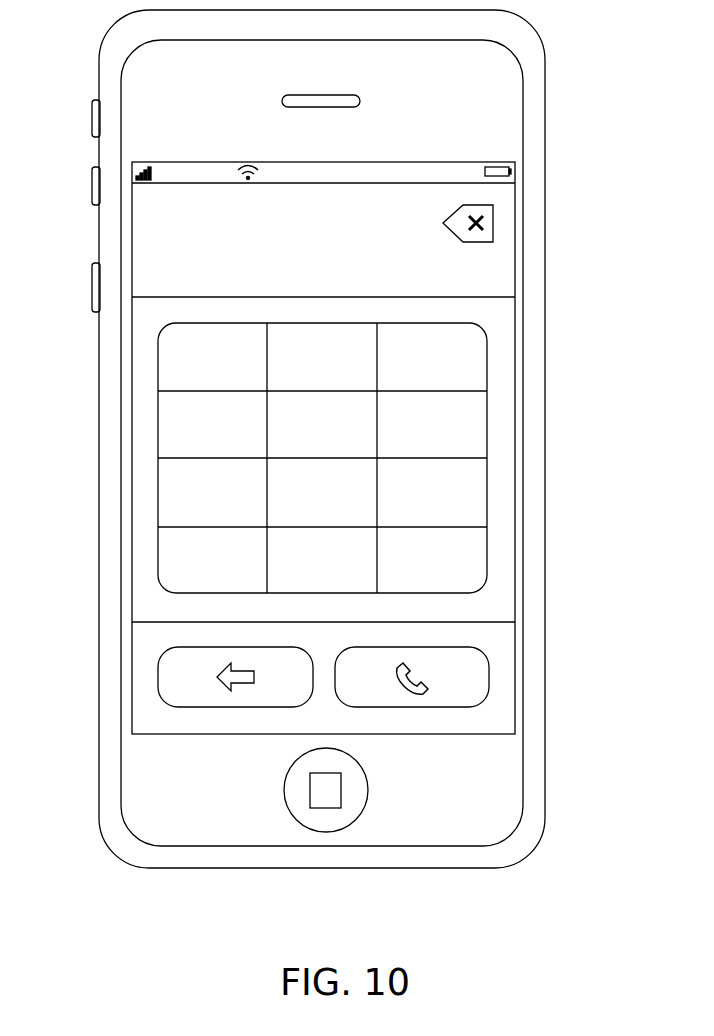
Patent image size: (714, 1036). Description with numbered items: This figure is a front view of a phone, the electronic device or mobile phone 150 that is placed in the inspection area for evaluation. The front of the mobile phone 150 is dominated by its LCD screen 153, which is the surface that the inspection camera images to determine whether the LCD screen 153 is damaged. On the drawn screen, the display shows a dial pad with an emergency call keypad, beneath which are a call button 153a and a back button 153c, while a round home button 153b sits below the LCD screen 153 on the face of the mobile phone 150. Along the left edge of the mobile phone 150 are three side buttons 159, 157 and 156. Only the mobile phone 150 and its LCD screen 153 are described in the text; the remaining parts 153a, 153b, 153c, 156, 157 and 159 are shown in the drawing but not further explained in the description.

The mobile phone 150 is at (580, 191).
The LCD screen 153 is at (498, 280).
The call button 153a is at (448, 663).
The home button 153b is at (313, 820).
The back button 153c is at (212, 693).
The side button 156 is at (93, 292).
The side button 157 is at (93, 190).
The side button 159 is at (92, 114).